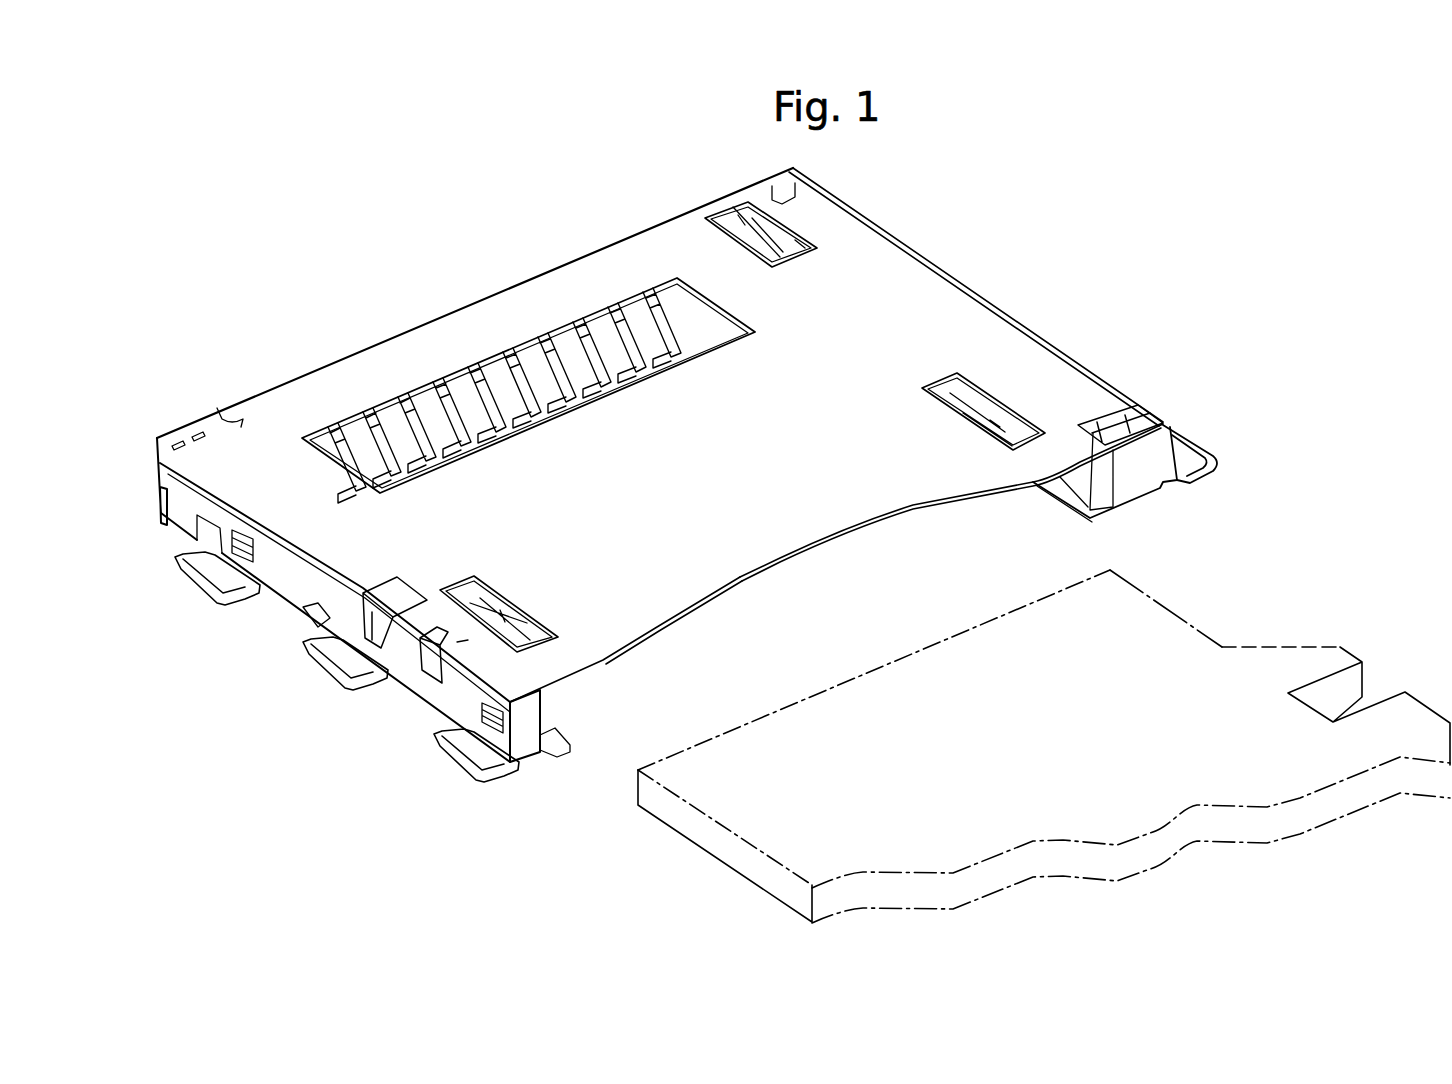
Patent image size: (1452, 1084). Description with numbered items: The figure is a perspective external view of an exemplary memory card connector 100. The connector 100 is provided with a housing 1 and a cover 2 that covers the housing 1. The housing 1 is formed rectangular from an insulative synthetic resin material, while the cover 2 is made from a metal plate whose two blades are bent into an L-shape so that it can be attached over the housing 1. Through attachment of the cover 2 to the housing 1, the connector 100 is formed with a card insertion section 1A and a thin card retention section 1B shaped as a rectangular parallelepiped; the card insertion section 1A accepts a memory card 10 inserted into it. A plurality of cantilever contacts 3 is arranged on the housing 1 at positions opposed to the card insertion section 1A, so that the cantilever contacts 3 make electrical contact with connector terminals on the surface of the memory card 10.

The connector 100 is at (286, 269).
The housing 1 is at (180, 427).
The card insertion section 1A is at (895, 542).
The card retention section 1B is at (670, 628).
The cover 2 is at (963, 317).
The cantilever contact 3 is at (590, 221).
The memory card 10 is at (698, 827).